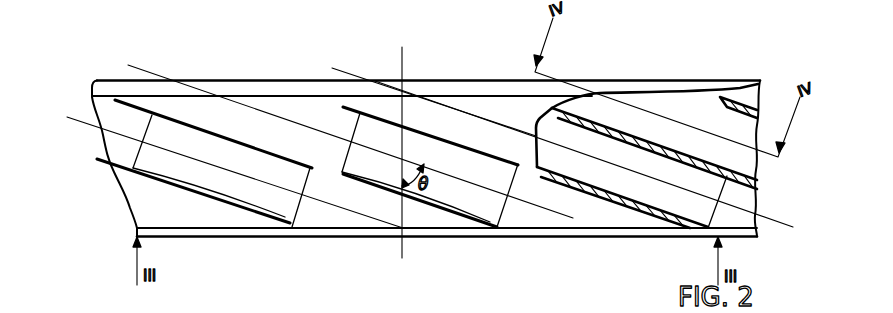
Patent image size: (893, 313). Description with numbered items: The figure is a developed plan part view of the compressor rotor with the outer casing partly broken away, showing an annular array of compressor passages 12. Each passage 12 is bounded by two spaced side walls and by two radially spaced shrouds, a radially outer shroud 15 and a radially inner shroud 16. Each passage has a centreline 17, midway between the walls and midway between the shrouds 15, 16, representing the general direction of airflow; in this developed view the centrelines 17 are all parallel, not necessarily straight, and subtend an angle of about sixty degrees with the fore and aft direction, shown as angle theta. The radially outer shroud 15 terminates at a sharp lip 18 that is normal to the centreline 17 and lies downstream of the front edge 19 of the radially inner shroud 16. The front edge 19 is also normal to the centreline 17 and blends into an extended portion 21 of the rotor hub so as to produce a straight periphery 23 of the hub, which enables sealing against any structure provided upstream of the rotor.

The compressor passage 12 is at (388, 179).
The radially outer shroud 15 is at (508, 113).
The radially inner shroud 16 is at (672, 105).
The centreline 17 is at (67, 117).
The sharp lip 18 is at (343, 158).
The front edge 19 is at (297, 188).
The extended portion 21 is at (402, 214).
The straight periphery 23 is at (362, 222).